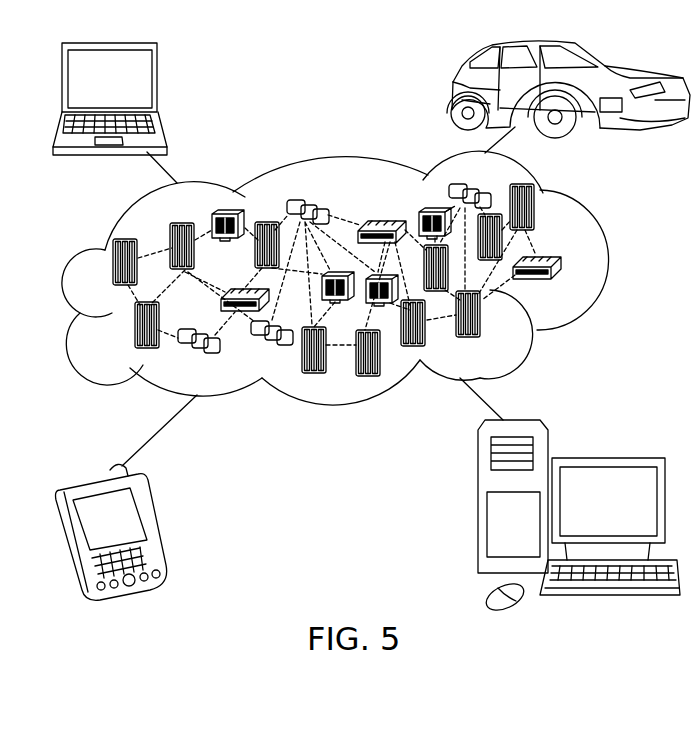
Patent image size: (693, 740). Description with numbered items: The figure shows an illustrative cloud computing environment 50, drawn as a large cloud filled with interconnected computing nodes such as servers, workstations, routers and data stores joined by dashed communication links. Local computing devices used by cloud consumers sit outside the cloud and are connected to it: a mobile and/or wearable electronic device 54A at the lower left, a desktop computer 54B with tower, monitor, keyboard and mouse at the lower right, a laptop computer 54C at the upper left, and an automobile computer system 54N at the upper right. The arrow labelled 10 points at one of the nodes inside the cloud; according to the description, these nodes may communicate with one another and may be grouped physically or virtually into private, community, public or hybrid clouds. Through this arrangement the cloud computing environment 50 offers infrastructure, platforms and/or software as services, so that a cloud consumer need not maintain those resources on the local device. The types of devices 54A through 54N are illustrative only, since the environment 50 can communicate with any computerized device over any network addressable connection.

The vehicle telematics system / network system 10 is at (567, 283).
The cloud computing environment 50 is at (607, 258).
The mobile and/or wearable electronic devices 54A is at (155, 525).
The desktop computer 54B is at (607, 455).
The laptop computer 54C is at (158, 84).
The automobile computer system 54N is at (453, 94).